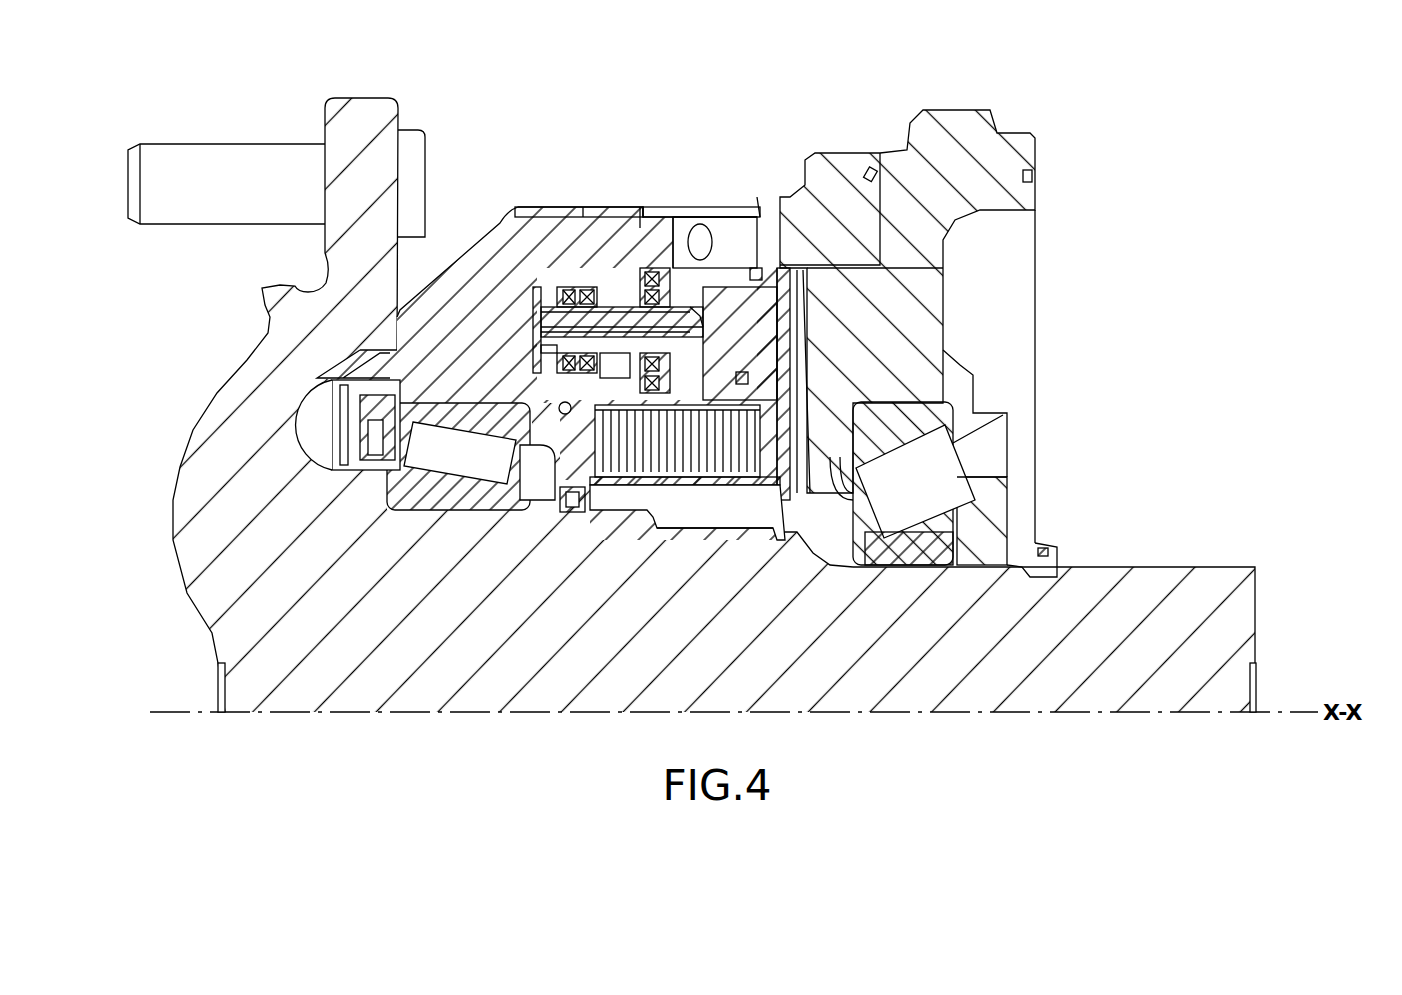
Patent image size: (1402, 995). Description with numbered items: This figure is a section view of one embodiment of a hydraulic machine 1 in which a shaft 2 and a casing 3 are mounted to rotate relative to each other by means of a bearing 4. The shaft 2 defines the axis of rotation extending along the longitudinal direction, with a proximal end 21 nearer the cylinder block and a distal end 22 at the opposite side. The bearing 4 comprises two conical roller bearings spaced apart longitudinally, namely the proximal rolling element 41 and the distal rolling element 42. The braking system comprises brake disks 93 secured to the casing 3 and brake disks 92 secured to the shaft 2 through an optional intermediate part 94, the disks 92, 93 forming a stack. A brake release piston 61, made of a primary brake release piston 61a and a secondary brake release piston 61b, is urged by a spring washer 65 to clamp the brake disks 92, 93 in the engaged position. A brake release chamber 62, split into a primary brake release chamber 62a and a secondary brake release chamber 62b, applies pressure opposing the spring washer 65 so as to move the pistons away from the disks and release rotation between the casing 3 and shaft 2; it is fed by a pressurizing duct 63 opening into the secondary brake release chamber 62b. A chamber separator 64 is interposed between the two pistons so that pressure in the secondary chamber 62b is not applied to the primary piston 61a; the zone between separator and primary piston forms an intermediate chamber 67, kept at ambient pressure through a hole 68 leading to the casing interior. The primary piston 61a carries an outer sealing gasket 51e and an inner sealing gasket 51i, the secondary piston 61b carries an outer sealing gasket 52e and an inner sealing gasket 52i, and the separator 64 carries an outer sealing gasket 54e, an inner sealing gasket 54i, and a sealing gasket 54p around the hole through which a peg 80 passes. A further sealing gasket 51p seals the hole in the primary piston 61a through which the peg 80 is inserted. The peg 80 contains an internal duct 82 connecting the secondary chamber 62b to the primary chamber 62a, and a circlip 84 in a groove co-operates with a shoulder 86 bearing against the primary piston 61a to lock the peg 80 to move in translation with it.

The hydraulic machine 1 is at (518, 132).
The shaft 2 is at (977, 686).
The casing 3 is at (572, 207).
The bearing 4 is at (613, 520).
The proximal end 21 is at (1256, 672).
The distal end 22 is at (216, 676).
The proximal rolling element 41 is at (840, 548).
The distal rolling element 42 is at (495, 480).
The outer sealing gasket 51e is at (570, 287).
The inner sealing gasket 51i is at (560, 372).
The sealing gasket 51p is at (575, 288).
The outer sealing gasket 52e is at (760, 265).
The inner sealing gasket 52i is at (752, 380).
The outer sealing gasket 54e is at (592, 290).
The inner sealing gasket 54i is at (677, 441).
The sealing gasket 54p is at (662, 298).
The brake release piston 61 is at (698, 165).
The primary brake release piston 61a is at (722, 240).
The secondary brake release piston 61b is at (770, 230).
The brake release chamber 62 is at (660, 165).
The primary brake release chamber 62a is at (583, 215).
The secondary brake release chamber 62b is at (658, 228).
The pressurizing duct 63 is at (692, 225).
The chamber separator 64 is at (652, 268).
The spring washer 65 is at (790, 313).
The intermediate chamber 67 is at (662, 372).
The hole 68 is at (622, 380).
The peg 80 is at (730, 366).
The internal duct 82 is at (540, 312).
The circlip 84 is at (540, 332).
The shoulder 86 is at (541, 350).
The brake disks 92 is at (672, 484).
The brake disks 93 is at (550, 408).
The intermediate part 94 is at (700, 528).